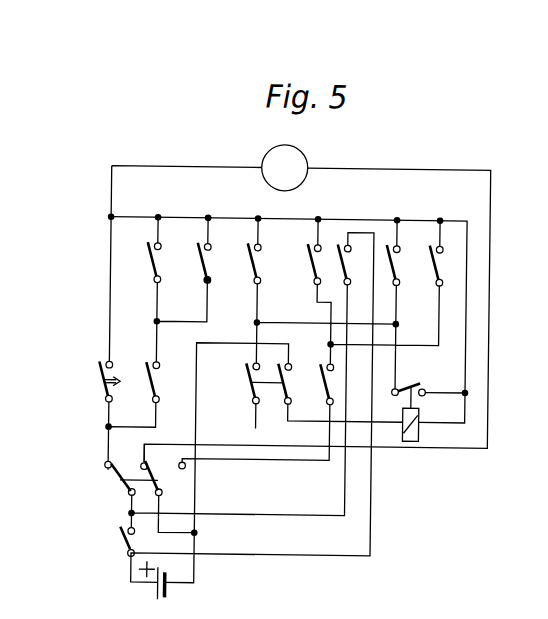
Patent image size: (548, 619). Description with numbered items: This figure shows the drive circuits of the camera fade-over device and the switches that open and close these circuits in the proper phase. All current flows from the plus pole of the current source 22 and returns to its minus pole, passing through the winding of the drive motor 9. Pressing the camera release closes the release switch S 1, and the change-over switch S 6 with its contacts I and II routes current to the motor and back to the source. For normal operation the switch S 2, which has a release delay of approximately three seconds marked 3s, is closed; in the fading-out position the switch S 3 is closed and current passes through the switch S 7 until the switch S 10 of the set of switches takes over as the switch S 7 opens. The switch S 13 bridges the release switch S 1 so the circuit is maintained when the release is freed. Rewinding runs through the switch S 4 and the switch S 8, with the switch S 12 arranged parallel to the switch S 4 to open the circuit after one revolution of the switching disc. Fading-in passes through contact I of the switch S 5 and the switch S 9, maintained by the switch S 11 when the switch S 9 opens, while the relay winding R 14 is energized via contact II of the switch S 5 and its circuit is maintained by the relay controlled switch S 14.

The drive motor 9 is at (306, 164).
The current source 22 is at (163, 592).
The relay winding R14 is at (421, 431).
The release switch S1 is at (118, 542).
The switch S2 is at (94, 381).
The switch S3 is at (143, 382).
The switch S4 is at (428, 266).
The switch S5 is at (264, 387).
The change-over switch S6 is at (141, 483).
The switch S7 is at (144, 265).
The switch S8 is at (334, 384).
The switch S9 is at (387, 265).
The switch S10 is at (194, 266).
The switch S11 is at (244, 266).
The switch S12 is at (303, 267).
The switch S13 is at (335, 267).
The relay controlled switch S14 is at (429, 385).
The time delay arrow (3 seconds) 3s is at (117, 372).